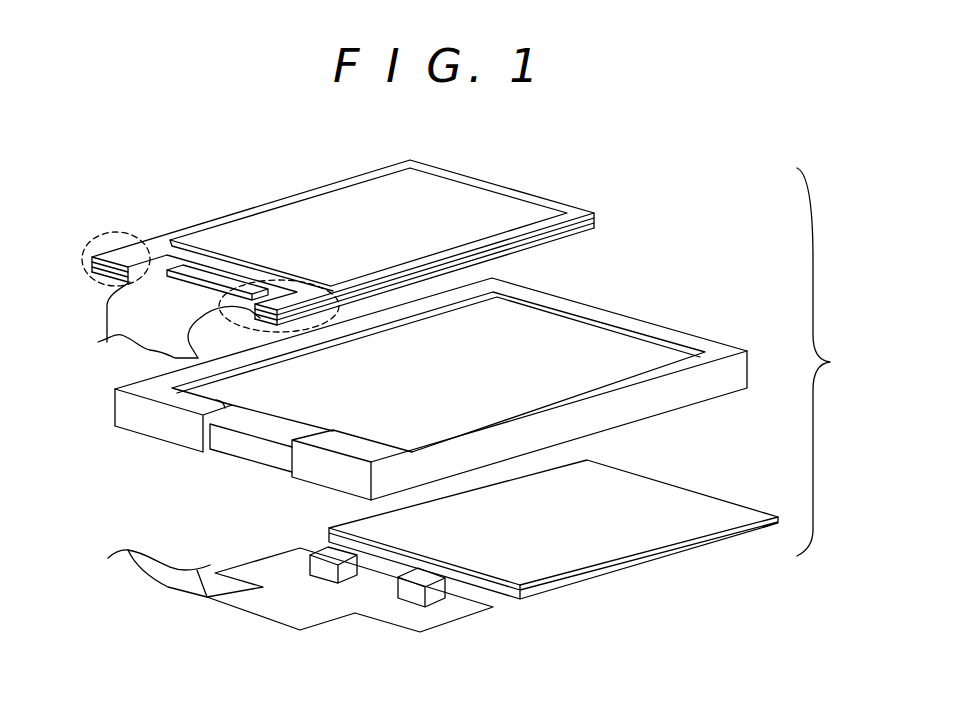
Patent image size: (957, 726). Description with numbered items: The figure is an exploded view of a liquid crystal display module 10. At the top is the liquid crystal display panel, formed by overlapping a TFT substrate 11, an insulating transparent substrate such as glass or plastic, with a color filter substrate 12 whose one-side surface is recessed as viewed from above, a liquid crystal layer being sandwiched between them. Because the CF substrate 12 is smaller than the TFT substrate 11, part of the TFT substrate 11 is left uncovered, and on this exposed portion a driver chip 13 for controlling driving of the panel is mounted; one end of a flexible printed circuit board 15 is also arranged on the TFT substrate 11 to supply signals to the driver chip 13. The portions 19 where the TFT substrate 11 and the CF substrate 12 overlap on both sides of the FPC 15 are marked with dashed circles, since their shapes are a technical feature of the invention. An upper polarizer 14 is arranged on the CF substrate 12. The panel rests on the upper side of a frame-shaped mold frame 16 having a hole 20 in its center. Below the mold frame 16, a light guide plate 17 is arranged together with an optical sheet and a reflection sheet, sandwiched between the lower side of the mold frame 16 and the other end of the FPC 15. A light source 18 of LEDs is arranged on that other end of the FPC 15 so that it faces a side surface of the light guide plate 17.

The liquid crystal display module 10 is at (835, 362).
The TFT substrate 11 is at (596, 227).
The color filter substrate 12 is at (596, 212).
The driver chip 13 is at (207, 275).
The upper polarizer 14 is at (457, 190).
The flexible printed circuit board 15 is at (113, 326).
The mold frame 16 is at (655, 325).
The light guide plate 17 is at (664, 488).
The light source 18 is at (413, 577).
The portions where the TFT substrate and CF substrate overlap 19 is at (108, 228).
The hole 20 is at (457, 361).